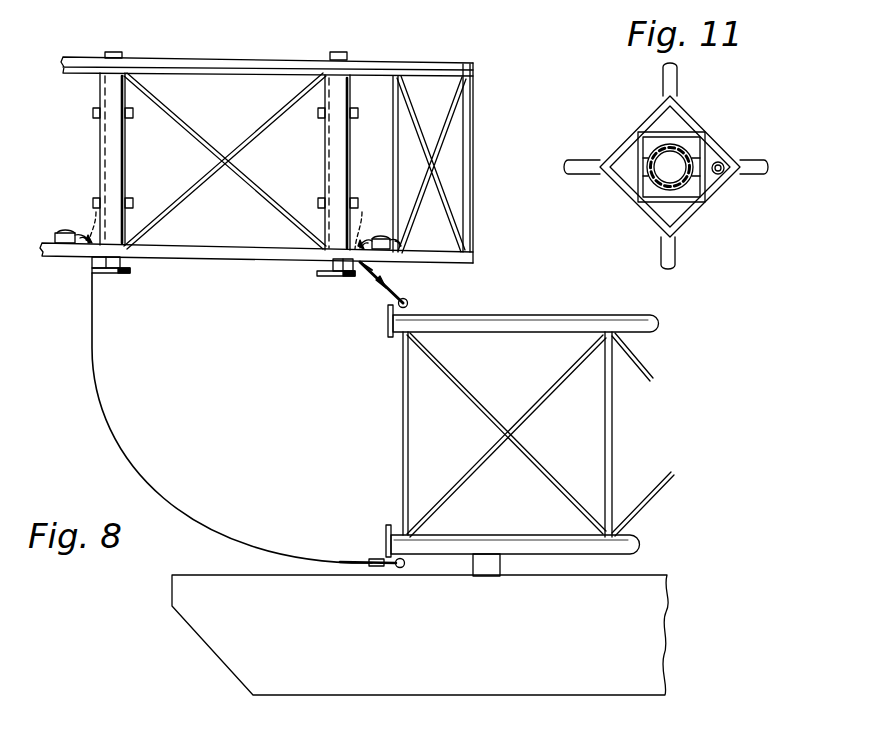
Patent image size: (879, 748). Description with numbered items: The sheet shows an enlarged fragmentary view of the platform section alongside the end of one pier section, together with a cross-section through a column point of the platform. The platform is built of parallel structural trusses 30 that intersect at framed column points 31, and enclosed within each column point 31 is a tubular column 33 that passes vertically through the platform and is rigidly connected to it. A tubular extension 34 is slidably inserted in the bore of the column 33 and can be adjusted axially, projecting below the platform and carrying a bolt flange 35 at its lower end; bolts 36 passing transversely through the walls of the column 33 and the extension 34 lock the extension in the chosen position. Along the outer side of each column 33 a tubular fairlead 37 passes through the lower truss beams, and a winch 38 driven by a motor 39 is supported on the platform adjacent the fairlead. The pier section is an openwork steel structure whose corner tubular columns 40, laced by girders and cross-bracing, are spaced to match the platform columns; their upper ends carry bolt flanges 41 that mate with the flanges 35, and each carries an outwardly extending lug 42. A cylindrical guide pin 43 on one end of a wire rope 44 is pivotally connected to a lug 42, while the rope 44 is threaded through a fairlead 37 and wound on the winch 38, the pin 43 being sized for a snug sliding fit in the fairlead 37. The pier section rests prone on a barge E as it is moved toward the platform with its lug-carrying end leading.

In FIG. 8, the structural truss 30 is at (416, 63).
In FIG. 11, the structural truss 30 is at (678, 80).
In FIG. 11, the column point 31 is at (700, 118).
In FIG. 8, the tubular column 33 is at (100, 133).
In FIG. 11, the tubular column 33 is at (700, 190).
In FIG. 8, the tubular extension 34 is at (118, 263).
In FIG. 11, the tubular extension 34 is at (670, 167).
In FIG. 8, the bolt flange 35 is at (128, 273).
In FIG. 8, the bolt 36 is at (133, 202).
In FIG. 8, the fairlead 37 is at (88, 238).
In FIG. 11, the fairlead 37 is at (721, 162).
In FIG. 8, the winch 38 is at (62, 232).
In FIG. 8, the motor 39 is at (55, 238).
In FIG. 8, the tubular column 40 is at (530, 316).
In FIG. 8, the bolt flange 41 is at (388, 320).
In FIG. 8, the lug 42 is at (410, 304).
In FIG. 8, the guide pin 43 is at (392, 290).
In FIG. 8, the wire rope 44 is at (105, 395).
In FIG. 8, the barge E is at (170, 600).